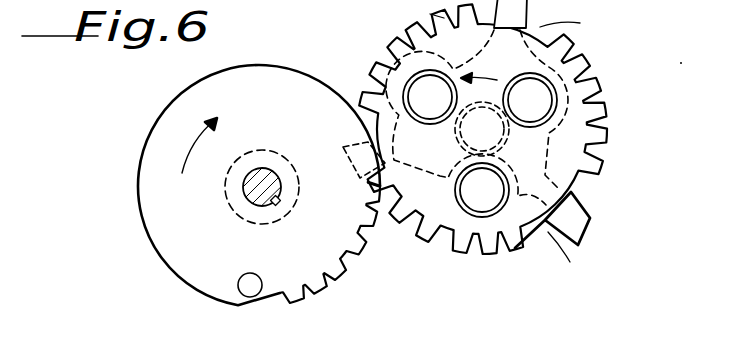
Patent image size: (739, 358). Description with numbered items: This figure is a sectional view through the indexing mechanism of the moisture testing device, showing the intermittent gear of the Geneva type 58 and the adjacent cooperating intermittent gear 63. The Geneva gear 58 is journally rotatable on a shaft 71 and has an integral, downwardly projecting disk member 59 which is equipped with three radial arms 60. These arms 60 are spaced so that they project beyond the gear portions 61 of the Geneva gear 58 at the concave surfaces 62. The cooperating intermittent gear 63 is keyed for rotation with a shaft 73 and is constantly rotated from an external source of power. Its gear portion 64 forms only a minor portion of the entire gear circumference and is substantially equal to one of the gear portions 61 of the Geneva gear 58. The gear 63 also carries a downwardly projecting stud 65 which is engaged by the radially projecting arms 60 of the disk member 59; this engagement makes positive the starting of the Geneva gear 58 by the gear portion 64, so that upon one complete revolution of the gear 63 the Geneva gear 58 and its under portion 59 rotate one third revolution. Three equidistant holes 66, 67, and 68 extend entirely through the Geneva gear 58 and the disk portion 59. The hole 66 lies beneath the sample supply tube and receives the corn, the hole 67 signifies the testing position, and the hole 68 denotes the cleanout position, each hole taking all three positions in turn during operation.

The Geneva gear 58 is at (567, 149).
The disk member 59 is at (507, 240).
The radial arms 60 is at (525, 12).
The gear portions 61 is at (478, 264).
The concave surfaces 62 is at (571, 147).
The intermittent gear 63 is at (178, 250).
The gear portion 64 is at (340, 273).
The stud 65 is at (250, 294).
The hole 66 is at (418, 90).
The hole 67 is at (472, 206).
The hole 68 is at (545, 101).
The shaft 71 is at (470, 138).
The shaft 73 is at (263, 178).